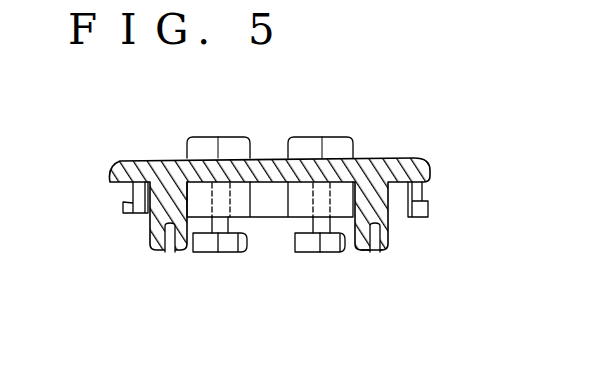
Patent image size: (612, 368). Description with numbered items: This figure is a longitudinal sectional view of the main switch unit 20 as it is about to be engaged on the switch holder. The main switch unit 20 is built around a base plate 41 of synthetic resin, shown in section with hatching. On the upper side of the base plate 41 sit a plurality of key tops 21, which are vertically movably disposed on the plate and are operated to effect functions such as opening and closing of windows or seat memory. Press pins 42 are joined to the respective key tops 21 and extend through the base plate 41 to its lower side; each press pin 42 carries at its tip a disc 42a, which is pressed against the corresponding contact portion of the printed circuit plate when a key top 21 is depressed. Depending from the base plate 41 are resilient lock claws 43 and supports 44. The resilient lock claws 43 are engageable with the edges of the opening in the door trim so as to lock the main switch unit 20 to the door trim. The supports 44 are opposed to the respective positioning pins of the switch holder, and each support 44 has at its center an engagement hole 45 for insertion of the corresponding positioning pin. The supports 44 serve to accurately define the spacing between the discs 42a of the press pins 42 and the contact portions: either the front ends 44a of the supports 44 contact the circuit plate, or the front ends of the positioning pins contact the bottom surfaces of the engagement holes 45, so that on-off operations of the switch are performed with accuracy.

The main switch unit 20 is at (491, 102).
The key top 21 is at (315, 137).
The base plate 41 is at (393, 163).
The press pin 42 is at (228, 225).
The disc 42a is at (218, 252).
The resilient lock claw 43 is at (127, 207).
The support 44 is at (324, 264).
The front end of support 44a is at (383, 251).
The engagement hole 45 is at (375, 253).